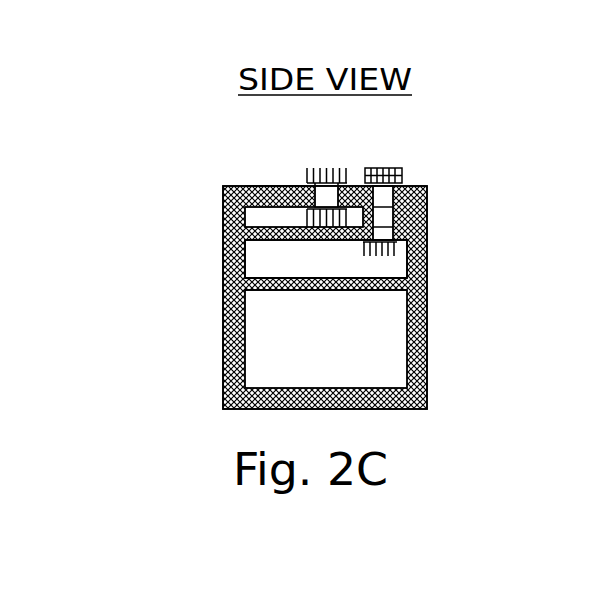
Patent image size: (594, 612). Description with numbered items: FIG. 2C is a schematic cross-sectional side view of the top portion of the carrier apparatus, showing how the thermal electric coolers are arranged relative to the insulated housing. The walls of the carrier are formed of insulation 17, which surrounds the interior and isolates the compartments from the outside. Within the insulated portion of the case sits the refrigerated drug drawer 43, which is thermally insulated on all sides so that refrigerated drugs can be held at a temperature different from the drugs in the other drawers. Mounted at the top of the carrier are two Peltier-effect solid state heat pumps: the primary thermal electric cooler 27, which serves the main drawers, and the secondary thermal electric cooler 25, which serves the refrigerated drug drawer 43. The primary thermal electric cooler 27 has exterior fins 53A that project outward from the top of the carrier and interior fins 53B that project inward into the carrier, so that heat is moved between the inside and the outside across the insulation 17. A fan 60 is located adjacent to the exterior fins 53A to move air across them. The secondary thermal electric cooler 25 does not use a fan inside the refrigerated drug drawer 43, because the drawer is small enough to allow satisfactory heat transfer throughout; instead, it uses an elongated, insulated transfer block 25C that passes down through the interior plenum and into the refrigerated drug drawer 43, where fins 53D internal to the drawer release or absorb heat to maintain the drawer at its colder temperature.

The insulation 17 is at (217, 355).
The secondary thermal electric cooler 25 is at (358, 250).
The elongated transfer block 25C is at (383, 198).
The primary thermal electric cooler 27 is at (330, 162).
The refrigerated drug drawer 43 is at (382, 268).
The exterior fins 53A is at (290, 173).
The interior fins 53B is at (302, 215).
The internal fins 53D is at (396, 249).
The fan 60 is at (407, 162).